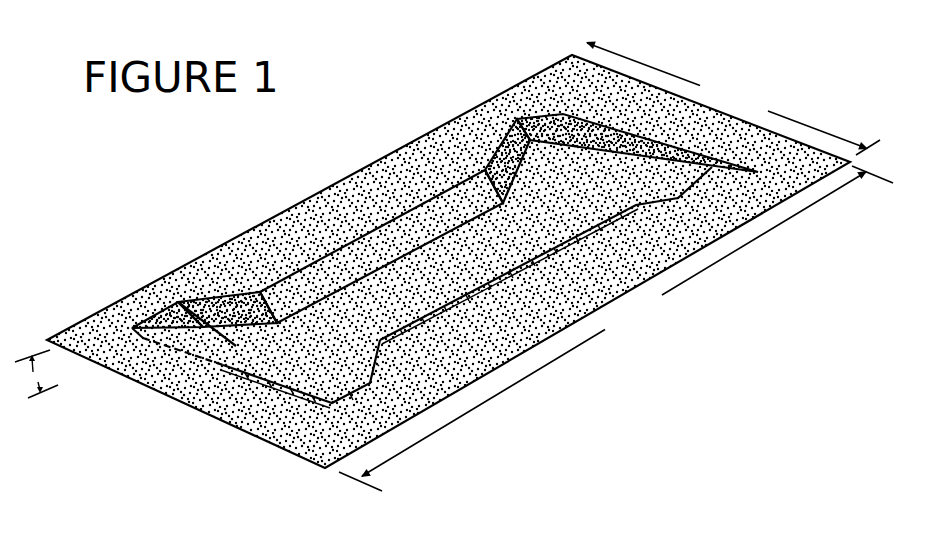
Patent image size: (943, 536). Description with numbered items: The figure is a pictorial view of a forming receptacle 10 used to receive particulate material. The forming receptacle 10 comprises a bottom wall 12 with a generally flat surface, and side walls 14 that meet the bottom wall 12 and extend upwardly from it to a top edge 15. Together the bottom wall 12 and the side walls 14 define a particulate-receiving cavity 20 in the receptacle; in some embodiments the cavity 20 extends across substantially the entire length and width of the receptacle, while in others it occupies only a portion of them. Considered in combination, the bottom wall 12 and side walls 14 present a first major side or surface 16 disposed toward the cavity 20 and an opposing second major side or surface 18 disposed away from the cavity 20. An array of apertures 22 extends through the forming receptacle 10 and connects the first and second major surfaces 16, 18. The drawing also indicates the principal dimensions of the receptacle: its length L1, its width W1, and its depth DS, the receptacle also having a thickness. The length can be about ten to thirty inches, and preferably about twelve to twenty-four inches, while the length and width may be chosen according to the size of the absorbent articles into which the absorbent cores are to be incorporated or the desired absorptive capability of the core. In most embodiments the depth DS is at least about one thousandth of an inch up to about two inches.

The forming receptacle 10 is at (294, 207).
The bottom wall 12 is at (200, 297).
The side walls 14 is at (231, 314).
The top edge 15 is at (291, 314).
The first major side or surface 16 is at (568, 177).
The second major side or surface 18 is at (282, 390).
The particulate-receiving cavity 20 is at (438, 256).
The array of apertures 22 is at (224, 364).
The width W1 is at (733, 99).
The length L1 is at (616, 328).
The depth DS is at (36, 374).